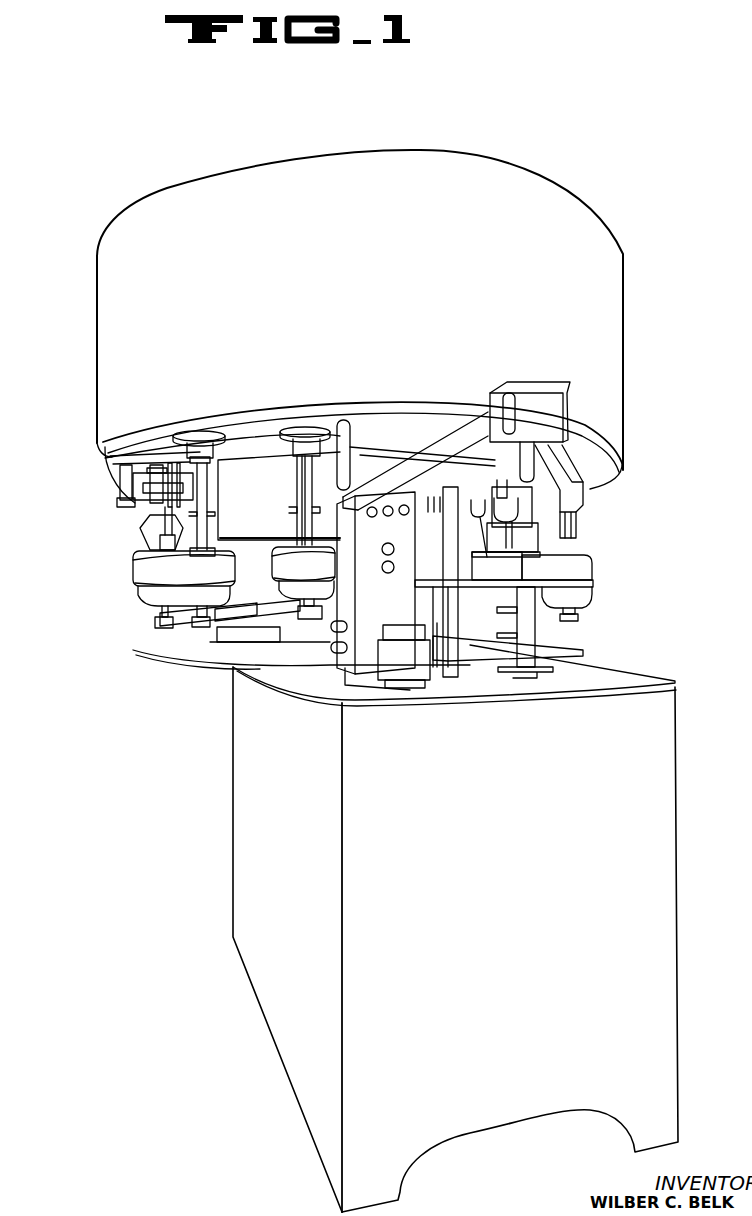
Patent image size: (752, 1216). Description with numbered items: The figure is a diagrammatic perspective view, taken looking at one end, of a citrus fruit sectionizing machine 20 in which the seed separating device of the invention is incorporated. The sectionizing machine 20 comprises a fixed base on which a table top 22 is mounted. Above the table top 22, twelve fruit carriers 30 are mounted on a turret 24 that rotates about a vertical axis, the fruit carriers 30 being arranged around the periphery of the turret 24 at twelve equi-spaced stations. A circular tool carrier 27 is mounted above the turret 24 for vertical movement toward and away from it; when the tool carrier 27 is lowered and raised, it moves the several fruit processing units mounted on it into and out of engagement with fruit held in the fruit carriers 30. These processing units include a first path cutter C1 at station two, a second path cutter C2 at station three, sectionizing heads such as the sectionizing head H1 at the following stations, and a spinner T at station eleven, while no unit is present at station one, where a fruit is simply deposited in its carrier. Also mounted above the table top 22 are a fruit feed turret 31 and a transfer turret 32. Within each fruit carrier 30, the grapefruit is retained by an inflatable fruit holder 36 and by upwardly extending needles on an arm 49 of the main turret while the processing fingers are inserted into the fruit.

The sectionizing machine 20 is at (590, 151).
The table top 22 is at (612, 673).
The turret 24 is at (252, 585).
The tool carrier 27 is at (100, 445).
The fruit carrier 30 is at (172, 575).
The fruit feed turret 31 is at (525, 556).
The transfer turret 32 is at (448, 566).
The inflatable fruit holder 36 is at (180, 598).
The arm 49 is at (300, 619).
The first path cutter C1 is at (295, 495).
The second path cutter C2 is at (211, 480).
The sectionizing head H1 is at (150, 525).
The spinner T is at (583, 517).